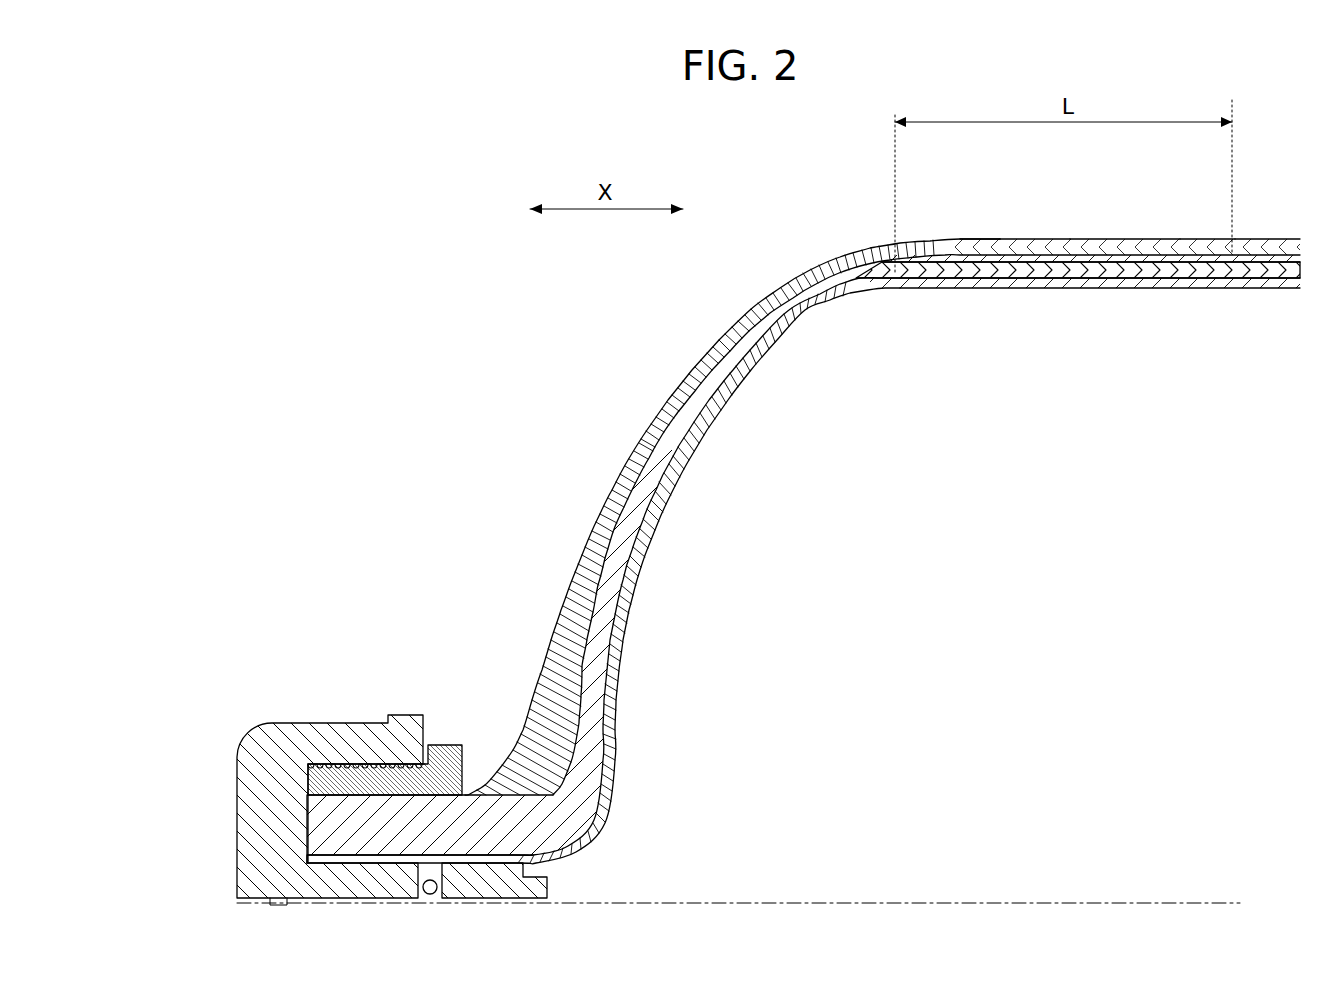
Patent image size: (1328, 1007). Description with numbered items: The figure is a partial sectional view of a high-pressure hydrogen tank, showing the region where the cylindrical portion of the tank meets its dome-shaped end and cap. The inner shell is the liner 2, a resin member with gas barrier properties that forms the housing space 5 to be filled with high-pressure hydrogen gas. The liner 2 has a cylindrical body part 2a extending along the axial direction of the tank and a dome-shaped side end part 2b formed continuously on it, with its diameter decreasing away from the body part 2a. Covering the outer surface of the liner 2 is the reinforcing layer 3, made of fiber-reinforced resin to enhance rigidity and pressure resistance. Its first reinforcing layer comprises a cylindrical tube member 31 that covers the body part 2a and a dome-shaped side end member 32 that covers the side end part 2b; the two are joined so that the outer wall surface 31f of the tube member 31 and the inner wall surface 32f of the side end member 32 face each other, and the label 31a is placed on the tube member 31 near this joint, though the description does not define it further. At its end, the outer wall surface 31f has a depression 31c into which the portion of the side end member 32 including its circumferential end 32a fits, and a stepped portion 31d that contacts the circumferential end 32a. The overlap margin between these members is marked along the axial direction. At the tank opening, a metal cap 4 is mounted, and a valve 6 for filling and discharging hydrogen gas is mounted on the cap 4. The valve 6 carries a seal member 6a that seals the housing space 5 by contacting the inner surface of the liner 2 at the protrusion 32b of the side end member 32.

The liner 2 is at (1108, 287).
The body part 2a is at (1258, 287).
The side end part 2b is at (700, 418).
The reinforcing layer 3 is at (1140, 242).
The cap 4 is at (445, 762).
The housing space 5 is at (963, 843).
The valve 6 is at (338, 735).
The seal member 6a is at (430, 895).
The tube member 31 is at (1167, 280).
The first layer upper surface 31a is at (952, 238).
The depression 31c is at (1097, 257).
The stepped portion 31d is at (1243, 240).
The outer wall surface 31f is at (1037, 240).
The side end member 32 is at (598, 652).
The circumferential end 32a is at (1220, 240).
The protrusion 32b is at (330, 832).
The inner wall surface 32f is at (1013, 285).